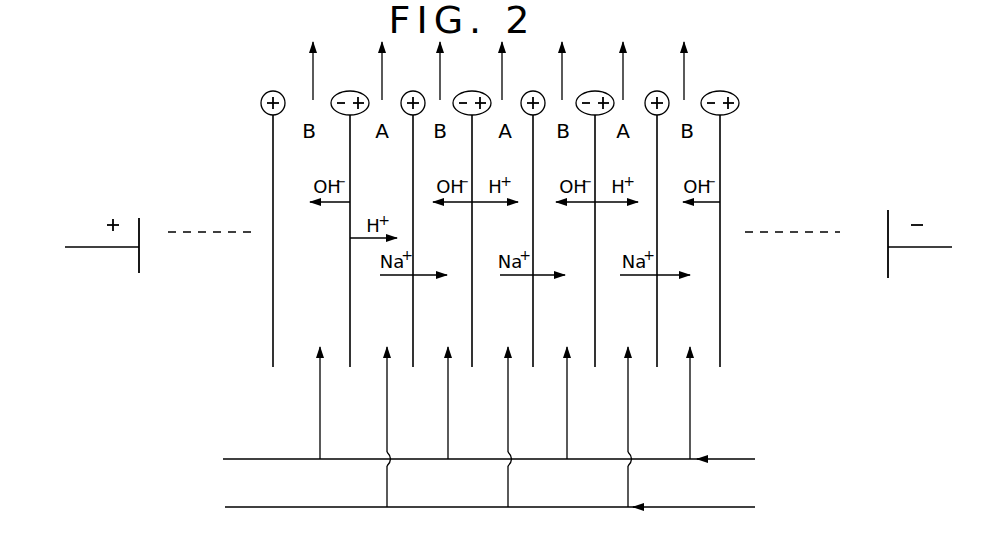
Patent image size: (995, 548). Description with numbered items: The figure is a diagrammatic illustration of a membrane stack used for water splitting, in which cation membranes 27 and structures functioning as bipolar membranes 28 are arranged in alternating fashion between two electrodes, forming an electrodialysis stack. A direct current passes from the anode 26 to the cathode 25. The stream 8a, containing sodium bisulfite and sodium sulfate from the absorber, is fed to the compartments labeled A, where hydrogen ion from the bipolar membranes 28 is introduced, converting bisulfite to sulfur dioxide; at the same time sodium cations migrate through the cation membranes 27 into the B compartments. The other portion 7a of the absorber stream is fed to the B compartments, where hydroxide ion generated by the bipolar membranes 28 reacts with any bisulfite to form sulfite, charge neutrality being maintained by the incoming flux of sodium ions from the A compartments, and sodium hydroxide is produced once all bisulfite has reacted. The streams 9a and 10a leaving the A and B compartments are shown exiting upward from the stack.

The portion of the absorber stream fed to the B compartments 7a is at (720, 459).
The stream containing NaHSO3 and Na2SO4 8a is at (727, 507).
The product stream from A compartments 9a is at (382, 70).
The product stream from B compartments 10a is at (313, 70).
The cathode 25 is at (890, 262).
The anode 26 is at (136, 262).
The cation membrane 27 is at (273, 308).
The bipolar membrane 28 is at (350, 300).